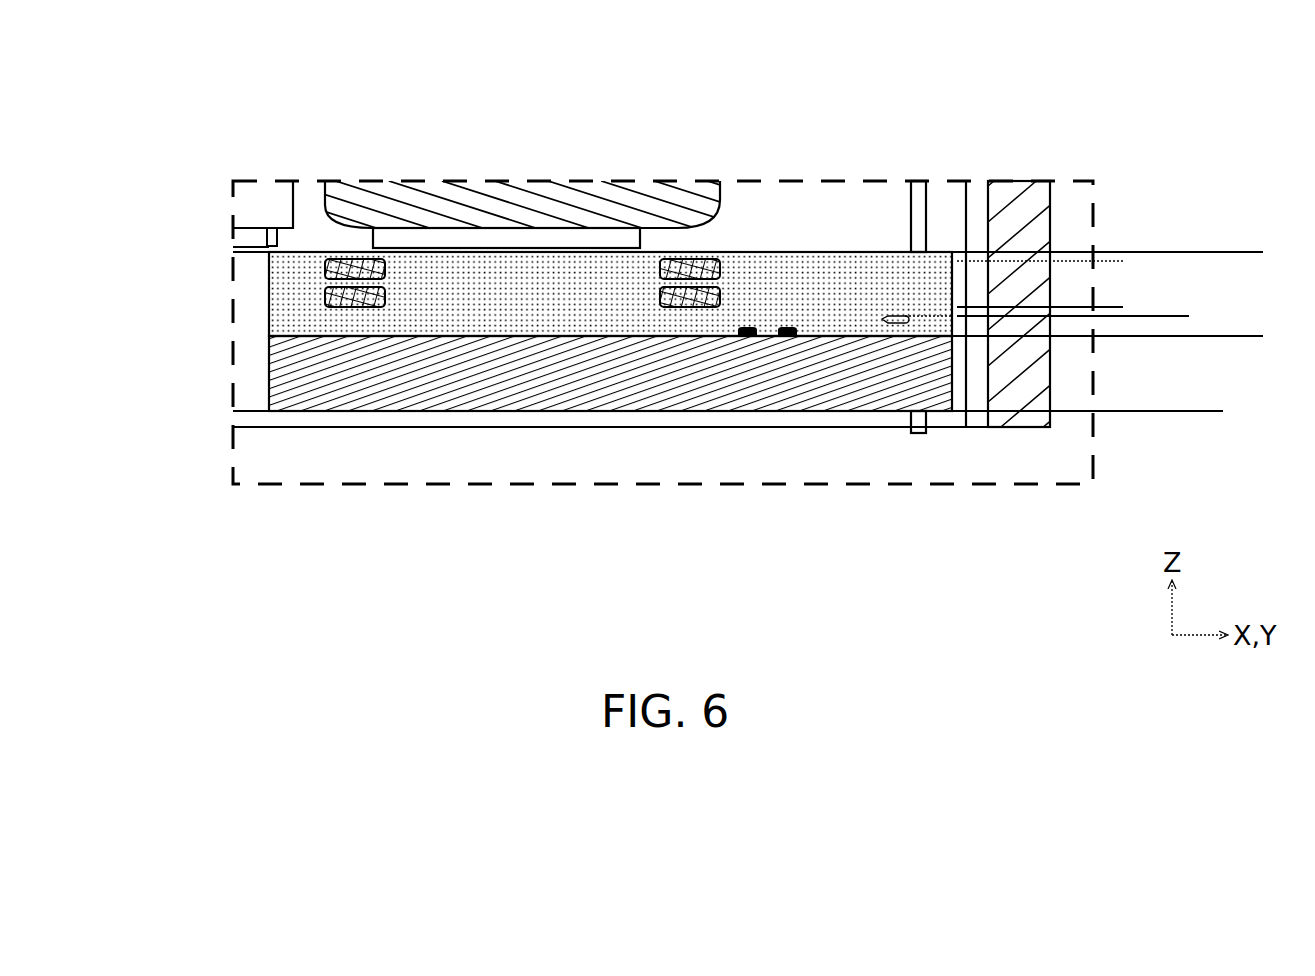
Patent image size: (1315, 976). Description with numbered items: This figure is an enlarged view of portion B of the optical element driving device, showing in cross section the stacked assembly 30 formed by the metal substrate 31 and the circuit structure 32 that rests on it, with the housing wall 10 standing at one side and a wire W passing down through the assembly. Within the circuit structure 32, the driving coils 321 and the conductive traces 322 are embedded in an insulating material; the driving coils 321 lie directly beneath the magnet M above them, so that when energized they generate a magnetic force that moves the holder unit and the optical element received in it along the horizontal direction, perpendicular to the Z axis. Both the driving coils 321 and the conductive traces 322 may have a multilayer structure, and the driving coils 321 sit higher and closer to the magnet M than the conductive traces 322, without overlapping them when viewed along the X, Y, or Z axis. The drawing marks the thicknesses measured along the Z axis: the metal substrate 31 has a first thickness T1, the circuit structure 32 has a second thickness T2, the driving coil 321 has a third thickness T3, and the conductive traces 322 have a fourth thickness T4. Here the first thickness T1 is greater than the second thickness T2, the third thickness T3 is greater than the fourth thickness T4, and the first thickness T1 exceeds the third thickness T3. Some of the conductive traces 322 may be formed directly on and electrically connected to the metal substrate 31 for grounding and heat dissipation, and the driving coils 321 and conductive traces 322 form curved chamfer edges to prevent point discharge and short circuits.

The wall / housing 10 is at (1030, 211).
The substrate structure 30 is at (692, 331).
The metal substrate 31 is at (717, 373).
The circuit structure 32 is at (266, 287).
The driving coils 321 is at (347, 272).
The conductive traces 322 is at (787, 338).
The magnet M is at (408, 200).
The wire W is at (918, 200).
The portion B is at (204, 115).
The first thickness T1 is at (1217, 339).
The second thickness T2 is at (1258, 255).
The third thickness T3 is at (1119, 263).
The fourth thickness T4 is at (1182, 278).